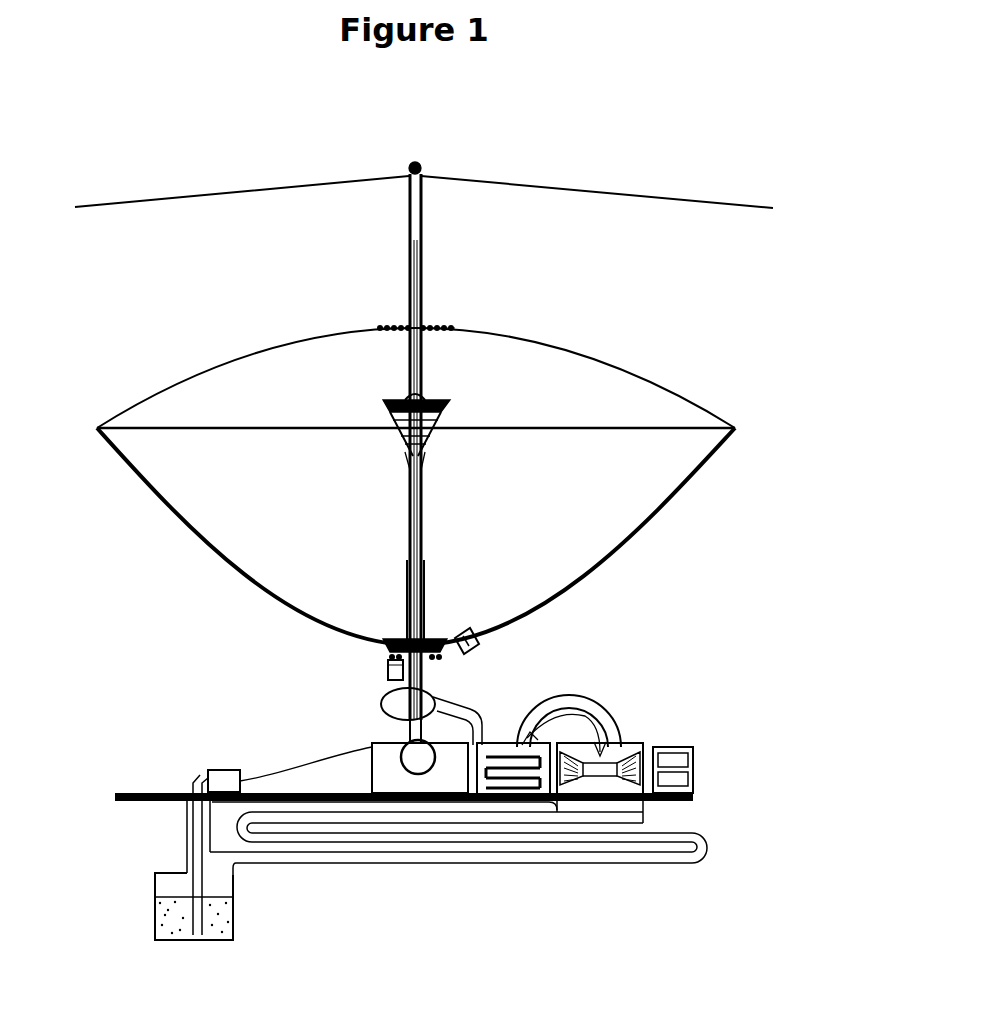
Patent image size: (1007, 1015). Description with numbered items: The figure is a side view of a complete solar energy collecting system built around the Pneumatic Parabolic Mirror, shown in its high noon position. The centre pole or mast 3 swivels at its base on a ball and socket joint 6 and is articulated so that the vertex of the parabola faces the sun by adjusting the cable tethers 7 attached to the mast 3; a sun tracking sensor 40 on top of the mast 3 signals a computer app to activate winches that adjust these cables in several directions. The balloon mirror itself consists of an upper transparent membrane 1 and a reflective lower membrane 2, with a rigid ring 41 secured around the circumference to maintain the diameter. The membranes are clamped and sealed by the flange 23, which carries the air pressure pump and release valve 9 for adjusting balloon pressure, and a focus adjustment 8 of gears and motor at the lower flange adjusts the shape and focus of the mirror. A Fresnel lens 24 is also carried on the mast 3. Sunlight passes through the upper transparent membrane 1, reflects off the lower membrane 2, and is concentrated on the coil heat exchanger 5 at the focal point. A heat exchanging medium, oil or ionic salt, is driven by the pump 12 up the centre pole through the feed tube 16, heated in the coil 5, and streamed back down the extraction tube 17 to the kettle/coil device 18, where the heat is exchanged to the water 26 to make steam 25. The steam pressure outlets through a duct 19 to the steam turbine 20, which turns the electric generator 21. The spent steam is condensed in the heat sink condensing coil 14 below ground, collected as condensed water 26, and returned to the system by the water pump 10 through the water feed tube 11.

The upper transparent membrane 1 is at (585, 363).
The reflective membrane 2 is at (640, 535).
The centre pole 3 is at (423, 227).
The coil heat exchanger 5 is at (382, 405).
The ball and socket joint 6 is at (372, 770).
The cable tethers 7 is at (165, 197).
The focus adjustment 8 is at (388, 668).
The air pressure pump/release valve 9 is at (472, 640).
The water pump 10 is at (222, 770).
The water feed tube 11 is at (198, 790).
The oil/ionic salt pump 12 is at (500, 741).
The heat sink condensing coil 14 is at (480, 863).
The feed tube for heat exchanging fluid 16 is at (483, 740).
The extraction tube for heat exchanging fluid 17 is at (382, 701).
The kettle/coil device 18 is at (553, 800).
The steam duct 19 is at (588, 706).
The steam turbine 20 is at (647, 745).
The electric generator 21 is at (693, 751).
The flange 23 is at (379, 327).
The Fresnel lens 24 is at (432, 323).
The steam 25 is at (563, 704).
The condensed water 26 is at (233, 915).
The sun tracking sensor 40 is at (409, 167).
The rigid ring 41 is at (682, 426).